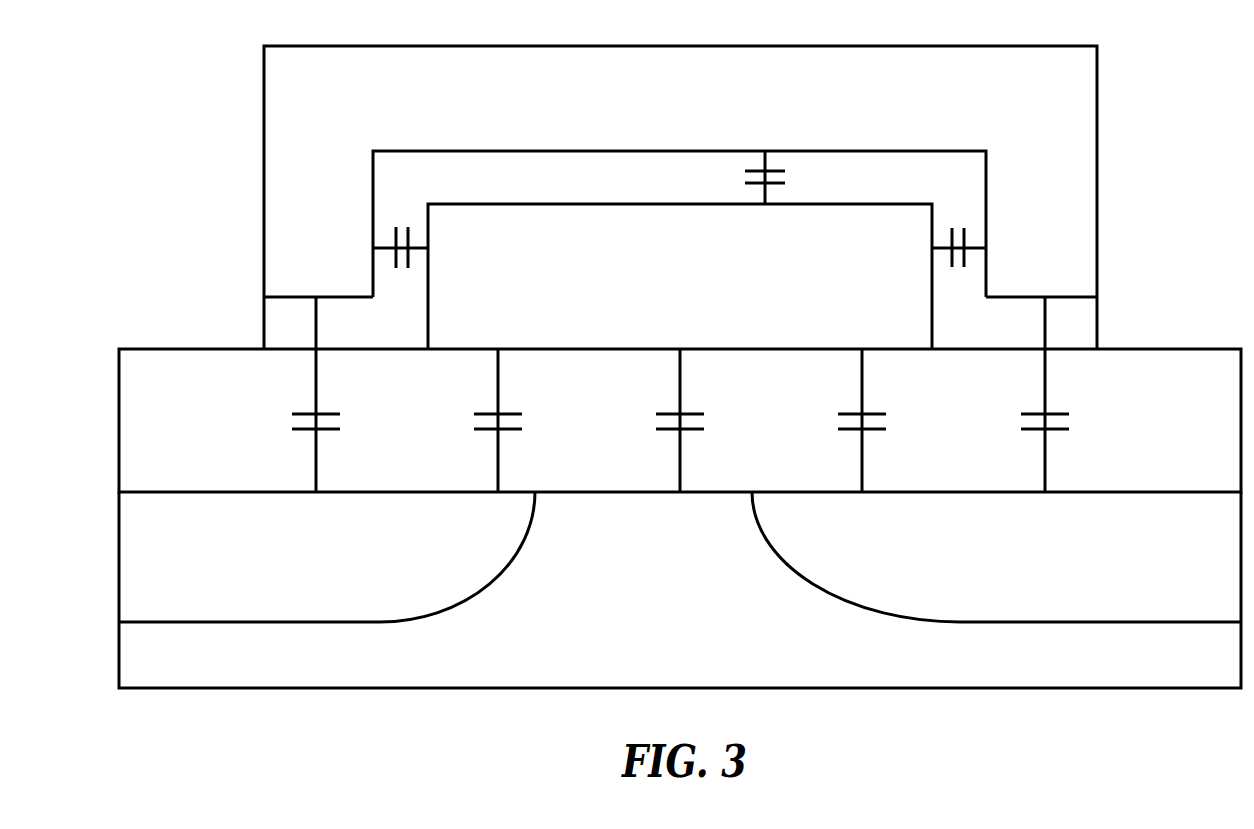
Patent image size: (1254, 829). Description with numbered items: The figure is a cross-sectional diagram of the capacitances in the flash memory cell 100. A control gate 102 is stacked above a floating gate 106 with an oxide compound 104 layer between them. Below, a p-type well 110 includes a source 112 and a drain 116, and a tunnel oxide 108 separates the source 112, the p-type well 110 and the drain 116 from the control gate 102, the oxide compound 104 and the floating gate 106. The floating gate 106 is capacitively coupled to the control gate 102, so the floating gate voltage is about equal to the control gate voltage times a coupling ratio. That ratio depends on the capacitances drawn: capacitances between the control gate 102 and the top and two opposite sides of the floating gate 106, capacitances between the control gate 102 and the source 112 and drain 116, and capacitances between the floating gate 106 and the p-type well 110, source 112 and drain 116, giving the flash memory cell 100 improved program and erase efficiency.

The flash memory cell 100 is at (1187, 126).
The control gate 102 is at (820, 114).
The oxide compound 104 is at (677, 189).
The floating gate 106 is at (827, 292).
The tunnel oxide 108 is at (765, 394).
The p-type well 110 is at (750, 612).
The source 112 is at (337, 561).
The drain 116 is at (1115, 561).